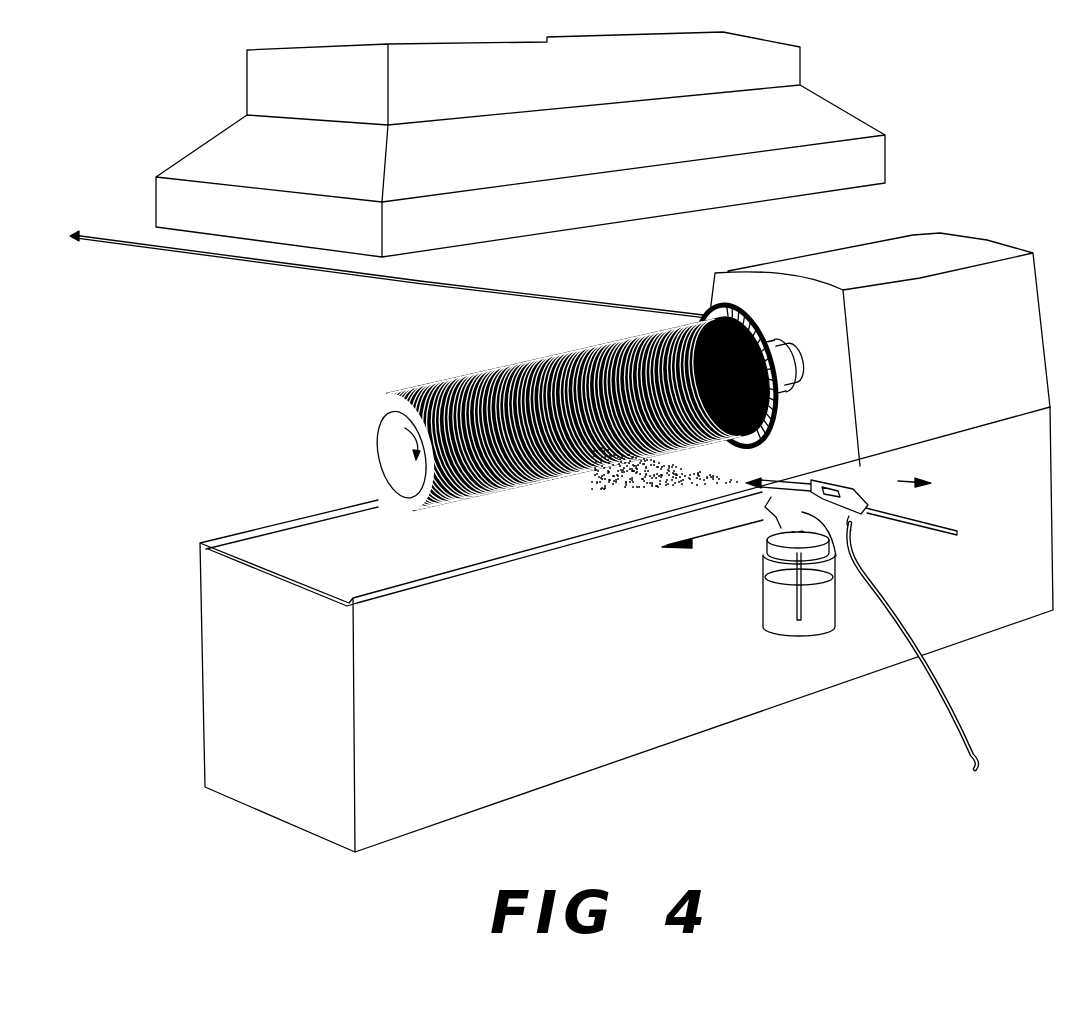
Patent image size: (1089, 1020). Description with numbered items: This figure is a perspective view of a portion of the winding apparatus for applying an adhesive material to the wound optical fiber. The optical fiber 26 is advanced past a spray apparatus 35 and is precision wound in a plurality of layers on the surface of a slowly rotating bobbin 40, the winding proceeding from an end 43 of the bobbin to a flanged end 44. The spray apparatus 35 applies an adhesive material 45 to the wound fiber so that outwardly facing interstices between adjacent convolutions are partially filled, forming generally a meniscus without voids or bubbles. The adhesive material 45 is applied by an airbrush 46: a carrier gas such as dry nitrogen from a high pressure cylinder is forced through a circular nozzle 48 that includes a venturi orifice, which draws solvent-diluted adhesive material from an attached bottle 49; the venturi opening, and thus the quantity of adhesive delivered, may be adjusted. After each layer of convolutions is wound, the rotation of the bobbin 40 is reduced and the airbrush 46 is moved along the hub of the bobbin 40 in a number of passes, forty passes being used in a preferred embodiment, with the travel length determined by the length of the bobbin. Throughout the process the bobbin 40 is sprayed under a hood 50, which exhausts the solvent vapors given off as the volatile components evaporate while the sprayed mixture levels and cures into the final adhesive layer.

The optical fiber 26 is at (166, 251).
The spray apparatus 35 is at (809, 553).
The bobbin 40 is at (707, 313).
The end 43 is at (387, 469).
The flanged end 44 is at (747, 322).
The adhesive material 45 is at (621, 486).
The airbrush 46 is at (864, 518).
The circular nozzle 48 is at (751, 474).
The bottle 49 is at (770, 620).
The hood 50 is at (865, 125).